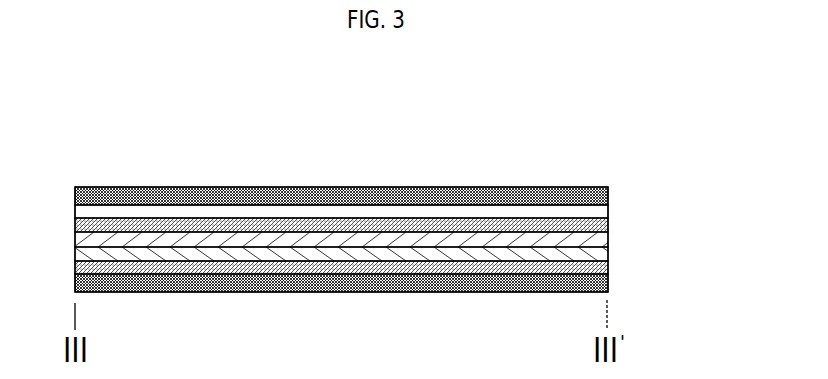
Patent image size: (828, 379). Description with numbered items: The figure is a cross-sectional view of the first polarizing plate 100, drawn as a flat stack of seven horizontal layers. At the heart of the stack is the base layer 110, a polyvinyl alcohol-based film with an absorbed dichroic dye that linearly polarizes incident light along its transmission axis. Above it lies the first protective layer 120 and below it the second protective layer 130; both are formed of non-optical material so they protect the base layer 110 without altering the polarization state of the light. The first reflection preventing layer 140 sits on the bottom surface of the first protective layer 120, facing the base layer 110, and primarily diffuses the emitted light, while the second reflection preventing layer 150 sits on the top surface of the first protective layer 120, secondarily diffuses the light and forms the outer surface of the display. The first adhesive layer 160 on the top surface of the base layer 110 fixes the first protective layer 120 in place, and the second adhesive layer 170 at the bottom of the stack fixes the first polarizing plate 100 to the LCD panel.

The first polarizing plate 100 is at (378, 113).
The second reflection preventing layer 150 is at (608, 190).
The first protective layer 120 is at (608, 211).
The first reflection preventing layer 140 is at (608, 224).
The first adhesive layer 160 is at (608, 240).
The base layer 110 is at (608, 254).
The second protective layer 130 is at (608, 268).
The second adhesive layer 170 is at (608, 282).